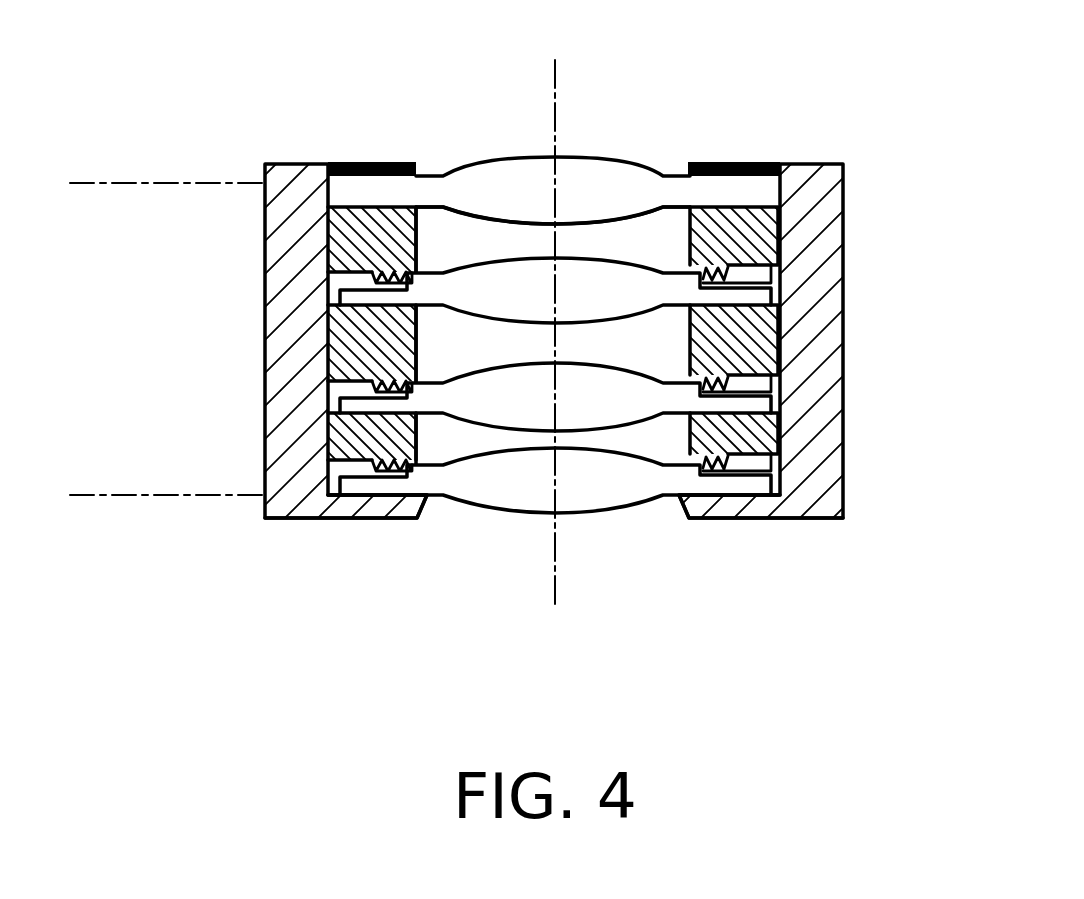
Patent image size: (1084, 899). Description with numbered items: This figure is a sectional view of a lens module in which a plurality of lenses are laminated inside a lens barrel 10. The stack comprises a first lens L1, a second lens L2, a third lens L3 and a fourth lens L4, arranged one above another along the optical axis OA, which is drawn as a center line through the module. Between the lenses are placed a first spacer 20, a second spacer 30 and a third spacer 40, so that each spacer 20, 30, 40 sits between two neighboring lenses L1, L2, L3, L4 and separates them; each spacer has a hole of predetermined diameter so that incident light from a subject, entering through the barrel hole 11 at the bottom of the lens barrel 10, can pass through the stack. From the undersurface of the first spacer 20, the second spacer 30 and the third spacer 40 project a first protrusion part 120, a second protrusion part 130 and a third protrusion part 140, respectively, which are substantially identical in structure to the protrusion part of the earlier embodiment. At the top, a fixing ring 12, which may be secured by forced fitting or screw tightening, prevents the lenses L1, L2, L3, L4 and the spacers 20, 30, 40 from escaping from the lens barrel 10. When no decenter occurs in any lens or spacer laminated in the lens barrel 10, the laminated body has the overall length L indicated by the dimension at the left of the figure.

The lens barrel 10 is at (292, 456).
The barrel hole 11 is at (425, 508).
The fixing ring 12 is at (752, 163).
The first spacer 20 is at (765, 441).
The second spacer 30 is at (765, 343).
The third spacer 40 is at (765, 233).
The first protrusion part 120 is at (793, 467).
The second protrusion part 130 is at (793, 383).
The third protrusion part 140 is at (793, 270).
The first lens L1 is at (530, 490).
The second lens L2 is at (470, 395).
The third lens L3 is at (460, 285).
The fourth lens L4 is at (475, 188).
The optical axis OA is at (553, 87).
The length of the laminated body L is at (81, 200).